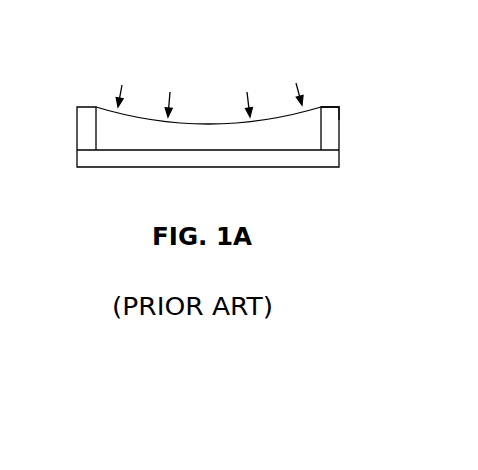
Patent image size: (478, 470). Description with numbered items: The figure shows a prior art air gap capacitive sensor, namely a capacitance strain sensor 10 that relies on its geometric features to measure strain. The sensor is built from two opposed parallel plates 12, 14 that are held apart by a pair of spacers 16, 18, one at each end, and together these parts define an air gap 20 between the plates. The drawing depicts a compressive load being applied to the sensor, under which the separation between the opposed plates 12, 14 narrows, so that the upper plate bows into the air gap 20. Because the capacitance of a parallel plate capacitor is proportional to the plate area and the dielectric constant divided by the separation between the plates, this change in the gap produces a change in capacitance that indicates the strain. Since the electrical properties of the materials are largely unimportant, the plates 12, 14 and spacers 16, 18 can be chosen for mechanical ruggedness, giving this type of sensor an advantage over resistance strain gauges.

The capacitance strain sensor 10 is at (360, 37).
The parallel plate 12 is at (327, 106).
The parallel plate 14 is at (303, 145).
The spacer 16 is at (92, 127).
The spacer 18 is at (330, 123).
The air gap 20 is at (207, 138).